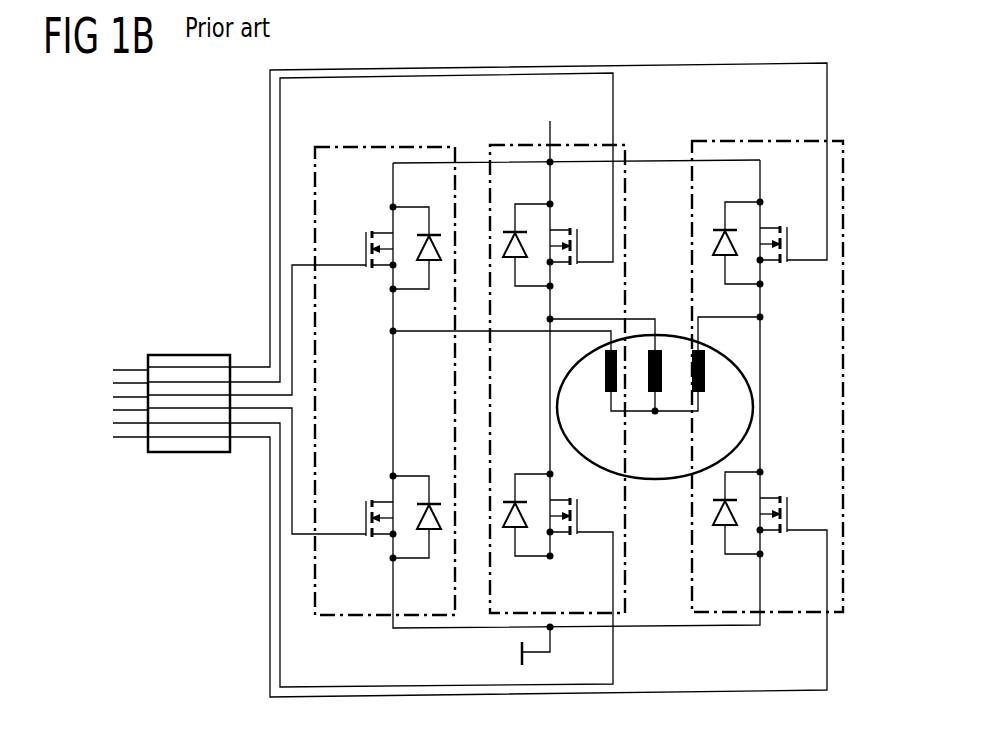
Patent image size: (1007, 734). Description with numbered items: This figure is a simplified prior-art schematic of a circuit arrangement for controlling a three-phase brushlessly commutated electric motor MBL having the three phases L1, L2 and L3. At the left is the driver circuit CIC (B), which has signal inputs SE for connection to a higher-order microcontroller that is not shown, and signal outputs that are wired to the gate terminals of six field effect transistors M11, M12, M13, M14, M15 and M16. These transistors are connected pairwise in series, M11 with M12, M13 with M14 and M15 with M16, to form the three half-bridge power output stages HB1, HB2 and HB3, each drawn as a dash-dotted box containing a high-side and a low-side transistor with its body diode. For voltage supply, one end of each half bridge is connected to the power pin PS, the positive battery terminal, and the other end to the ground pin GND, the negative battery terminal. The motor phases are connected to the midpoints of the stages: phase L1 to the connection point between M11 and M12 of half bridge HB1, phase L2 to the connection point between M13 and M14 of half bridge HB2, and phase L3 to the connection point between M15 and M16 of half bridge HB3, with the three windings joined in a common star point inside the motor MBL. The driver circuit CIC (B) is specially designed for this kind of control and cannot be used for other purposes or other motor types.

The driver circuit CIC is at (189, 403).
The signal inputs SE is at (110, 357).
The first half-bridge power output stage HB1 is at (385, 144).
The second half-bridge power output stage HB2 is at (566, 144).
The third half-bridge power output stage HB3 is at (765, 140).
The power pin PS is at (550, 121).
The ground pin GND is at (576, 614).
The field effect transistor M11 is at (382, 288).
The field effect transistor M12 is at (378, 486).
The field effect transistor M13 is at (578, 280).
The field effect transistor M14 is at (534, 462).
The field effect transistor M15 is at (777, 283).
The field effect transistor M16 is at (777, 478).
The brushlessly commutated electric motor MBL is at (648, 480).
The first phase L1 is at (606, 394).
The second phase L2 is at (657, 394).
The third phase L3 is at (702, 394).